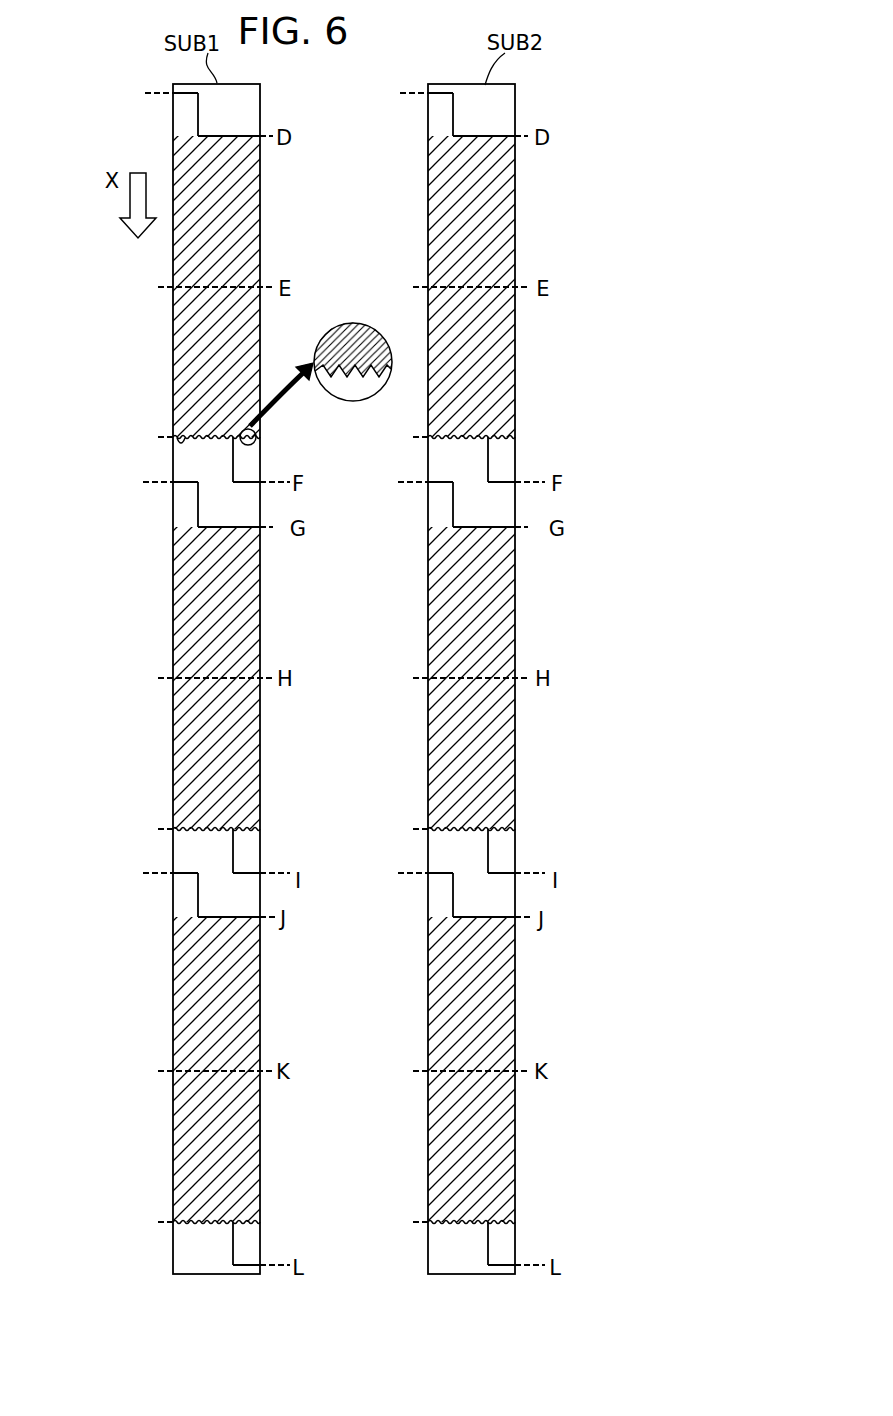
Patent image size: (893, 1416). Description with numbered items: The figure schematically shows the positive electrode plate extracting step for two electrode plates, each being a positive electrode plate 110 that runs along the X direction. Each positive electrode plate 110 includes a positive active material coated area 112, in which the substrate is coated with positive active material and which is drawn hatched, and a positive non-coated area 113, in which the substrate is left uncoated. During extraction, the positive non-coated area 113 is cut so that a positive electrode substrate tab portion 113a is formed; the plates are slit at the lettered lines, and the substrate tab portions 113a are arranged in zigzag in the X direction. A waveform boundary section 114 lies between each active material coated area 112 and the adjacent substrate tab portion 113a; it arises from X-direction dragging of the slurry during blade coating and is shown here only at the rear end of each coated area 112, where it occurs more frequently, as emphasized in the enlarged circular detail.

The positive electrode plate 110 is at (126, 99).
The positive active material coated area 112 is at (180, 362).
The positive non-coated area 113 is at (200, 472).
The positive electrode substrate tab portion 113a is at (178, 507).
The waveform boundary section 114 is at (180, 441).